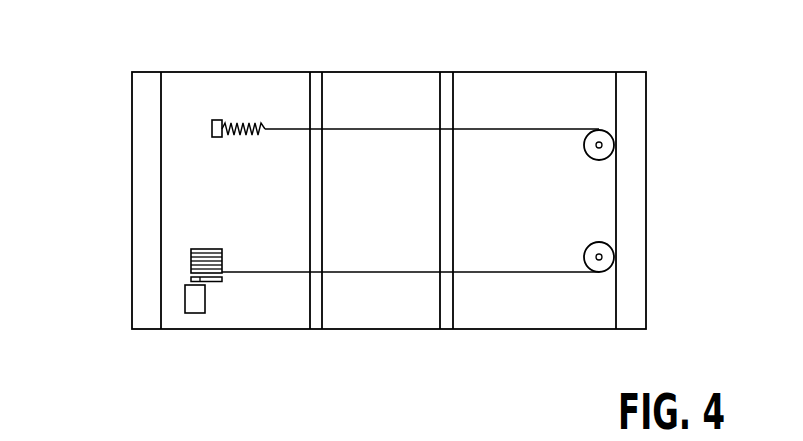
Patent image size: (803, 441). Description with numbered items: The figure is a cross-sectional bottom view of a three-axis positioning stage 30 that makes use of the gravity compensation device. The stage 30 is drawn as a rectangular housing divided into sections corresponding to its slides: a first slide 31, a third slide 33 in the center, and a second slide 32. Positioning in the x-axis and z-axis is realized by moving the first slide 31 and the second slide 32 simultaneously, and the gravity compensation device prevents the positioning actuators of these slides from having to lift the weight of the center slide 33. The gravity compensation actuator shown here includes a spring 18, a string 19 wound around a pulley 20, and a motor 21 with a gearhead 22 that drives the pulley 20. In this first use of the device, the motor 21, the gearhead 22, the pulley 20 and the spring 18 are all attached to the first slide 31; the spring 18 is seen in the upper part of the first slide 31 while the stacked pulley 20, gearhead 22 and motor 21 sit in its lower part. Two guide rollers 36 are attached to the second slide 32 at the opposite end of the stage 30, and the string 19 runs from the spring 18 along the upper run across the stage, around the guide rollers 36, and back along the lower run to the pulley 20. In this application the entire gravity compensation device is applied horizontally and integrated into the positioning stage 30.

The spring 18 is at (238, 120).
The string 19 is at (532, 128).
The pulley 20 is at (191, 258).
The motor 21 is at (194, 313).
The gearhead 22 is at (191, 278).
The positioning stage 30 is at (99, 347).
The first slide 31 is at (267, 309).
The second slide 32 is at (545, 309).
The third slide 33 is at (383, 310).
The guide rollers 36 is at (615, 145).